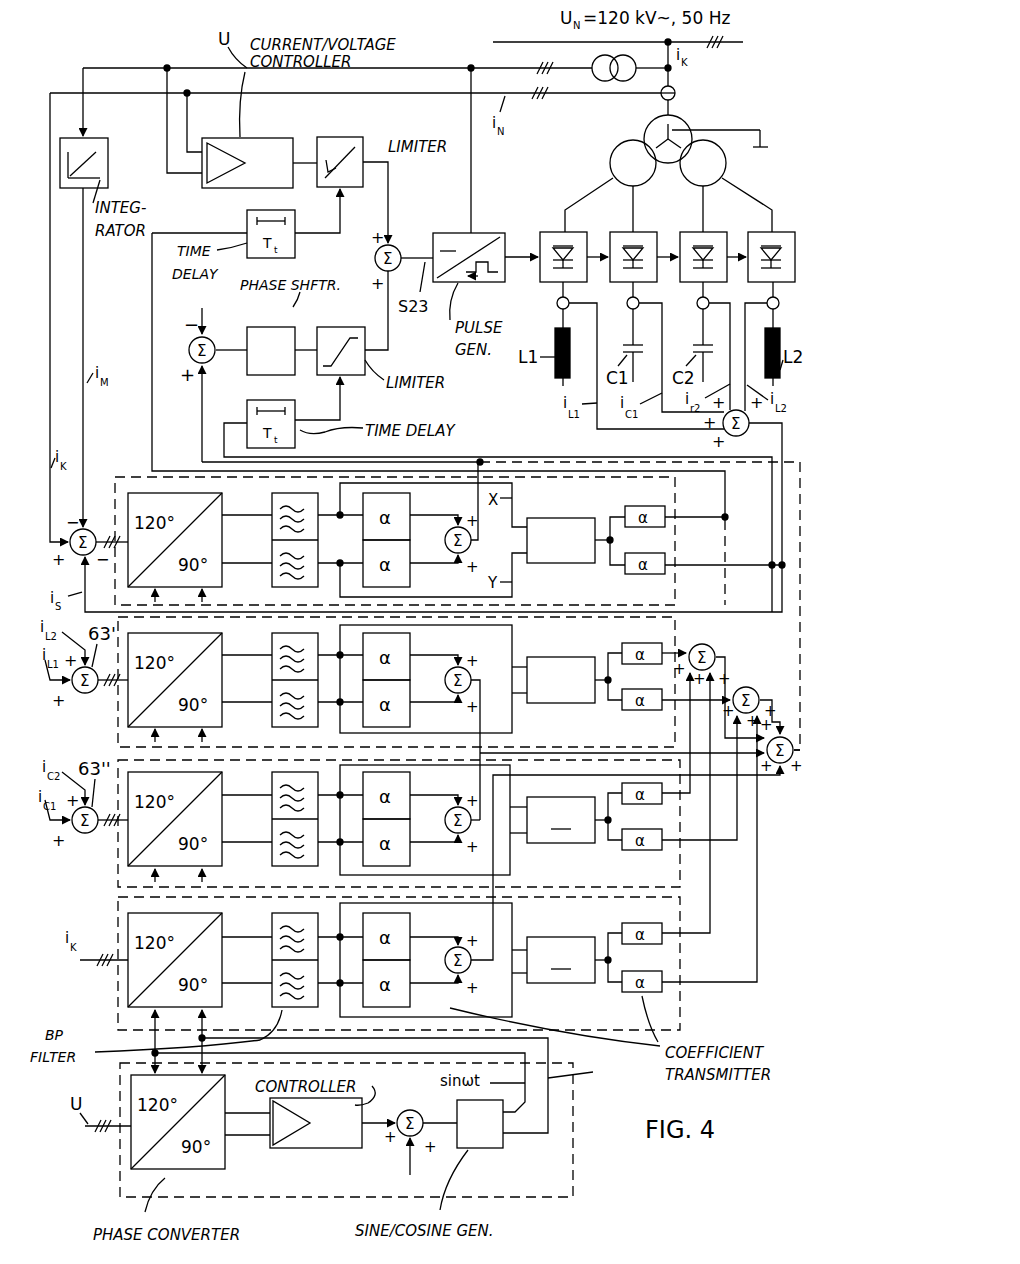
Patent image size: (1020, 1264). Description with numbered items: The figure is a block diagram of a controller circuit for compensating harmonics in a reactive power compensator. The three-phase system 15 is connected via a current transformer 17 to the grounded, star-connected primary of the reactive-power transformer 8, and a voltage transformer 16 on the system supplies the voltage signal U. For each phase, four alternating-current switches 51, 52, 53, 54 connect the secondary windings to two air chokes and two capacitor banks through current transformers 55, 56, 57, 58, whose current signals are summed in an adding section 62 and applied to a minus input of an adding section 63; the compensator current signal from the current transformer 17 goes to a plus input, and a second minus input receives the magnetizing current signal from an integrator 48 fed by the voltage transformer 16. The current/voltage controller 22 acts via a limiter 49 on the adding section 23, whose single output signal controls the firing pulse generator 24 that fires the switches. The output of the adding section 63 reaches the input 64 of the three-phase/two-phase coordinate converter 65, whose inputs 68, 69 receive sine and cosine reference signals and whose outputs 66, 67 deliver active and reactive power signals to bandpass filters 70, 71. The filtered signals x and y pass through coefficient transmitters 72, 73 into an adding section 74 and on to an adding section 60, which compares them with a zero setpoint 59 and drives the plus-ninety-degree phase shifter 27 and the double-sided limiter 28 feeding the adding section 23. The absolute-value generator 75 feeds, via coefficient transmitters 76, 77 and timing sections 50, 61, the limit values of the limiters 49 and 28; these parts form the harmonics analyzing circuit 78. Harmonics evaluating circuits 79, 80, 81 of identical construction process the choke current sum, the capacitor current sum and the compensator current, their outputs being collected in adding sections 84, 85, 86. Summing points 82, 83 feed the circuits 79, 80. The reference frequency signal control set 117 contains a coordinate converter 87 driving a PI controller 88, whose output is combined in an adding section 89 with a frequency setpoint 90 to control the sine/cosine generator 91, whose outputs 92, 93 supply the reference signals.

The reactive-power transformer 8 is at (594, 154).
The three-phase system 15 is at (498, 42).
The voltage transformer 16 is at (592, 82).
The current transformer 17 is at (675, 93).
The current/voltage controller 22 is at (248, 138).
The adding section 23 is at (397, 247).
The firing pulse generator 24 is at (478, 233).
The +90° phase shifter 27 is at (272, 320).
The double-sided limiter 28 is at (342, 320).
The integrator 48 is at (92, 138).
The limiter 49 is at (338, 137).
The timing section 50 is at (247, 220).
The alternating-current switch 51 is at (575, 232).
The alternating-current switch 52 is at (641, 232).
The alternating-current switch 53 is at (711, 232).
The alternating-current switch 54 is at (779, 232).
The current transformer 55 is at (557, 304).
The current transformer 56 is at (627, 303).
The current transformer 57 is at (697, 303).
The current transformer 58 is at (767, 303).
The setpoint 59 is at (201, 309).
The adding section 60 is at (212, 335).
The timing section 61 is at (296, 418).
The adding section 62 is at (744, 432).
The adding section 63 is at (73, 519).
The input 64 is at (122, 535).
The three-phase/two-phase coordinate converter 65 is at (147, 493).
The output 66 is at (247, 520).
The output 67 is at (226, 565).
The input 68 is at (150, 600).
The input 69 is at (206, 602).
The bandpass filter 70 is at (300, 470).
The bandpass filter 71 is at (320, 556).
The coefficient transmitter 72 is at (410, 510).
The coefficient transmitter 73 is at (410, 582).
The adding section 74 is at (446, 545).
The absolute-value generator 75 is at (561, 518).
The coefficient transmitter 76 is at (644, 923).
The coefficient transmitter 77 is at (665, 565).
The harmonics analyzing circuit 78 is at (678, 492).
The harmonics evaluating circuit 79 is at (678, 622).
The harmonics evaluating circuit 80 is at (680, 805).
The harmonics evaluating circuit 81 is at (678, 900).
The summing element 82 is at (78, 693).
The summing element 83 is at (78, 833).
The adding section 84 is at (703, 640).
The adding section 85 is at (758, 690).
The adding section 86 is at (805, 665).
The three-phase/two-phase coordinate converter 87 is at (178, 1174).
The PI controller 88 is at (308, 1148).
The adding section 89 is at (402, 1137).
The frequency setpoint 90 is at (427, 1164).
The sine/cosine generator 91 is at (487, 1148).
The output 92 is at (548, 1094).
The output 93 is at (505, 1136).
The reference frequency signal control set 117 is at (118, 1175).